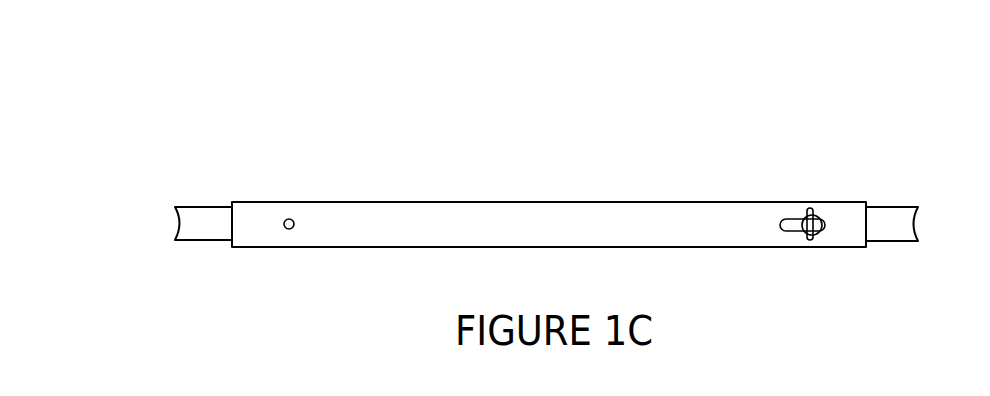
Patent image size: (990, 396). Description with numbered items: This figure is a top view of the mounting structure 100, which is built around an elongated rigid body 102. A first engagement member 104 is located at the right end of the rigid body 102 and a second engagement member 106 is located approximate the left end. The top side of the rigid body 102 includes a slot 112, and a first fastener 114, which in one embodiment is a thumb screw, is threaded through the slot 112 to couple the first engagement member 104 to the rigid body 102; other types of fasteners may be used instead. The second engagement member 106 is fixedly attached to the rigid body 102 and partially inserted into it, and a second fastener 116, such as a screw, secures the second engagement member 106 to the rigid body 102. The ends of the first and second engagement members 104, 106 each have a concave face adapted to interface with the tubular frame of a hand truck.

The mounting structure 100 is at (552, 130).
The rigid body 102 is at (549, 213).
The first engagement member 104 is at (923, 213).
The second engagement member 106 is at (178, 213).
The slot 112 is at (770, 186).
The first fastener 114 is at (847, 183).
The second fastener 116 is at (328, 181).